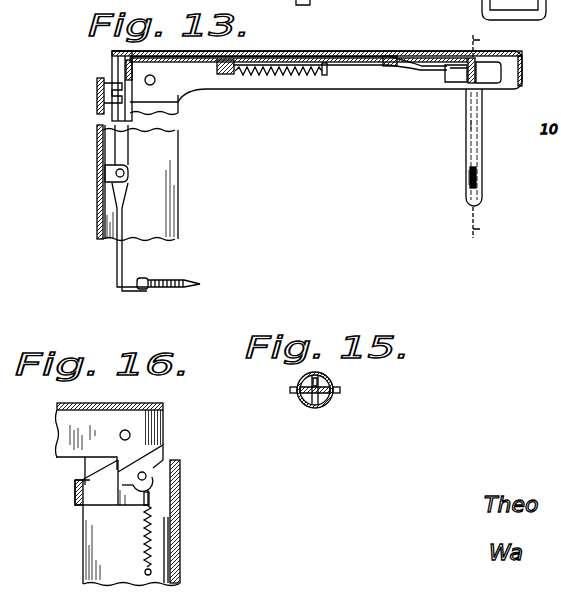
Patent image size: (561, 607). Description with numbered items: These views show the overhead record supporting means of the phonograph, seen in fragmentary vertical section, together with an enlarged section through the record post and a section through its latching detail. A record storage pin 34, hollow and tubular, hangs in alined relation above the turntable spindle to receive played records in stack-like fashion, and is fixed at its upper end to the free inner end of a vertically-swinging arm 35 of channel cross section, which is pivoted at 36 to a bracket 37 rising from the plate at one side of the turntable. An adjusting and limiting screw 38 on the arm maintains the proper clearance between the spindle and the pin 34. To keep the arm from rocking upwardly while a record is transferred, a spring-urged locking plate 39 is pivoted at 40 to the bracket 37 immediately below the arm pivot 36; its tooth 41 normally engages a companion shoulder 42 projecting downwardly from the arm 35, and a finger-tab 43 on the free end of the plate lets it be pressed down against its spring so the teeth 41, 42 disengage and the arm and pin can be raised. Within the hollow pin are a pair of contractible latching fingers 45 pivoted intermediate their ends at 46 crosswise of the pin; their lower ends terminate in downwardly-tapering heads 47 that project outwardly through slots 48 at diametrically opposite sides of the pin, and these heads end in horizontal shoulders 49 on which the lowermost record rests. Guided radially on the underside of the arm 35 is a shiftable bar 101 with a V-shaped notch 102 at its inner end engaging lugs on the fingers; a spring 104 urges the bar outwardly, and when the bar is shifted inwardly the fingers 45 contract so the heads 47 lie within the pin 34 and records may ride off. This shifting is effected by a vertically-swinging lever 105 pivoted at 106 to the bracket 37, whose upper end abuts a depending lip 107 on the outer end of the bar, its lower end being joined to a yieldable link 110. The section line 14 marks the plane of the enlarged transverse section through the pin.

In FIG. 13, the section line 14- 14 is at (489, 138).
In FIG. 13, the record storage pin 34 is at (483, 130).
In FIG. 15, the record storage pin 34 is at (308, 407).
In FIG. 13, the vertically-swinging arm 35 is at (360, 51).
In FIG. 16, the vertically-swinging arm 35 is at (62, 425).
In FIG. 13, the arm pivot 36 is at (155, 80).
In FIG. 16, the arm pivot 36 is at (130, 432).
In FIG. 13, the bracket 37 is at (97, 208).
In FIG. 16, the bracket 37 is at (180, 530).
In FIG. 13, the adjusting and limiting screw 38 is at (98, 100).
In FIG. 16, the locking plate 39 is at (77, 510).
In FIG. 16, the locking plate pivot 40 is at (150, 474).
In FIG. 16, the tooth 41 is at (85, 463).
In FIG. 16, the shoulder 42 is at (118, 506).
In FIG. 16, the finger-tab 43 is at (77, 473).
In FIG. 13, the latching fingers 45 is at (469, 126).
In FIG. 15, the latching fingers 45 is at (332, 405).
In FIG. 15, the finger pivot 46 is at (326, 381).
In FIG. 13, the finger heads 47 is at (469, 181).
In FIG. 13, the slots 48 is at (478, 182).
In FIG. 15, the horizontal shoulders 49 is at (376, 397).
In FIG. 13, the shiftable bar 101 is at (356, 65).
In FIG. 13, the V-shaped notch 102 is at (463, 65).
In FIG. 13, the spring 104 is at (283, 76).
In FIG. 13, the vertically-swinging lever 105 is at (127, 152).
In FIG. 13, the lever pivot 106 is at (126, 181).
In FIG. 13, the depending lip 107 is at (115, 62).
In FIG. 13, the yieldable link 110 is at (194, 274).